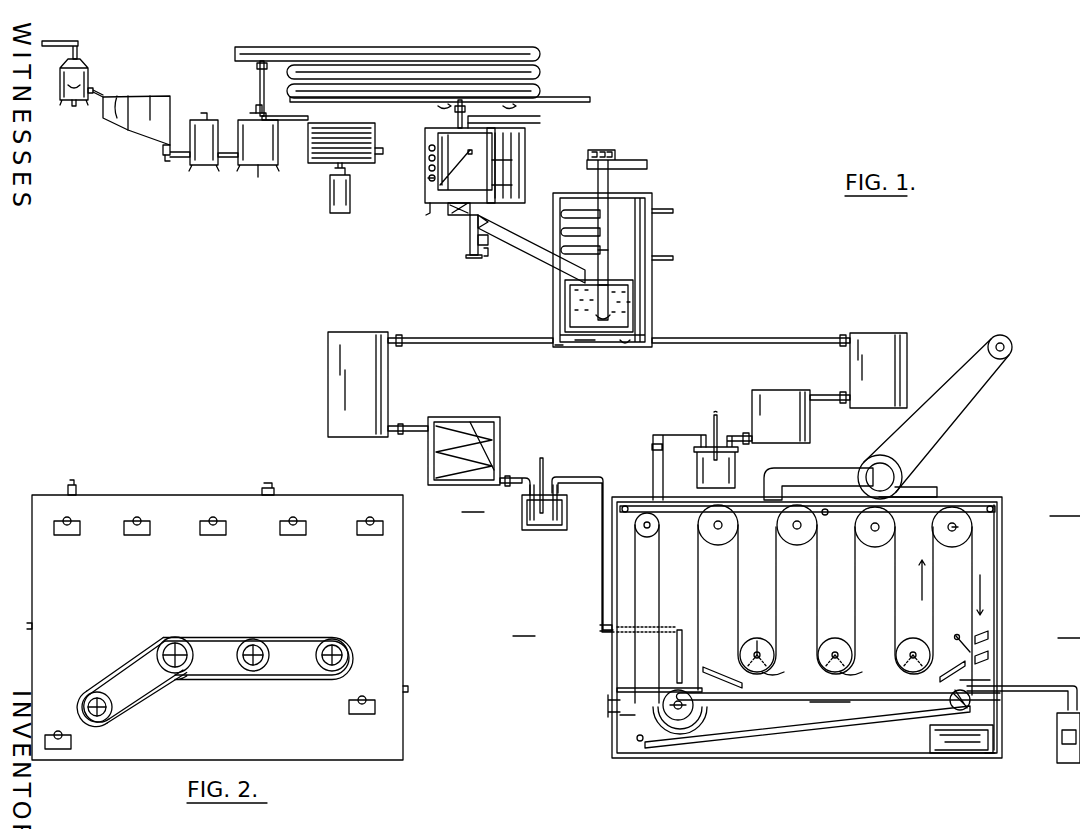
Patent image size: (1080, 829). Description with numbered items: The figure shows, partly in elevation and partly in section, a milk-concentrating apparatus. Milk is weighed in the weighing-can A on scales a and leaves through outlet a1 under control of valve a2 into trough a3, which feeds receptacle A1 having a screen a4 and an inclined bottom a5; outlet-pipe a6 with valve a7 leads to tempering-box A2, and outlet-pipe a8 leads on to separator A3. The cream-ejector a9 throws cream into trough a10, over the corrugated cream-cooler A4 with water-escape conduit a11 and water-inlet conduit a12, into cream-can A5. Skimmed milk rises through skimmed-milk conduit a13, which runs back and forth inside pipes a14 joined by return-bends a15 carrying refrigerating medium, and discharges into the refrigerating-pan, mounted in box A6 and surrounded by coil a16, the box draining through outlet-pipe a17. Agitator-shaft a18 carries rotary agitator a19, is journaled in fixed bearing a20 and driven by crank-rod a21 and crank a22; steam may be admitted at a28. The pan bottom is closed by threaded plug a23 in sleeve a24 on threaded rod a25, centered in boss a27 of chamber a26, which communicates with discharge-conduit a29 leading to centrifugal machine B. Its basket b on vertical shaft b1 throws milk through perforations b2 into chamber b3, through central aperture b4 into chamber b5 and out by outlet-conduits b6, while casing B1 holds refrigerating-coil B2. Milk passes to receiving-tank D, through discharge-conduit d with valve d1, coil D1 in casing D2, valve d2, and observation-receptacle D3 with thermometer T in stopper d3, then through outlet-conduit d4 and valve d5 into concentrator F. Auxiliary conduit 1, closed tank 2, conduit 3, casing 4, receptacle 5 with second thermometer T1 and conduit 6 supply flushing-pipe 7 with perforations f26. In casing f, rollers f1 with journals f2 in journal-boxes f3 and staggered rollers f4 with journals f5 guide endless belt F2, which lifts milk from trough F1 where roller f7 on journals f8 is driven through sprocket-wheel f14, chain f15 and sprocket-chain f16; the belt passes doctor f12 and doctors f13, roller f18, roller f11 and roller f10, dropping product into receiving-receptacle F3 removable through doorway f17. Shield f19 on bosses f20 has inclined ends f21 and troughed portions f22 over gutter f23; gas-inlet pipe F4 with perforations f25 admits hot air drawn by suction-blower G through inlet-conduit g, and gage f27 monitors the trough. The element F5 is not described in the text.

In FIG. 1, the scales a is at (66, 44).
In FIG. 1, the weighing-can A is at (61, 82).
In FIG. 1, the outlet a1 is at (91, 89).
In FIG. 1, the valve a2 is at (75, 107).
In FIG. 1, the trough a3 is at (106, 86).
In FIG. 1, the screen a4 is at (137, 113).
In FIG. 1, the bottom a5 is at (122, 100).
In FIG. 1, the outlet-pipe a6 is at (165, 160).
In FIG. 1, the valve a7 is at (162, 154).
In FIG. 1, the outlet-pipe a8 is at (228, 160).
In FIG. 1, the cream-ejector a9 is at (255, 116).
In FIG. 1, the trough a10 is at (308, 118).
In FIG. 1, the water-escape conduit a11 is at (265, 175).
In FIG. 1, the water-inlet conduit a12 is at (385, 154).
In FIG. 1, the skimmed-milk conduit a13 is at (455, 106).
In FIG. 1, the pipes a14 is at (355, 65).
In FIG. 1, the return-bends a15 is at (541, 69).
In FIG. 1, the coil a16 is at (425, 182).
In FIG. 1, the outlet-pipe a17 is at (428, 212).
In FIG. 1, the agitator-shaft a18 is at (501, 167).
In FIG. 1, the rotary agitator a19 is at (453, 218).
In FIG. 1, the fixed bearing a20 is at (521, 109).
In FIG. 1, the crank-rod a21 is at (532, 118).
In FIG. 1, the crank a22 is at (540, 123).
In FIG. 1, the threaded plug a23 is at (493, 247).
In FIG. 1, the internally-threaded sleeve a24 is at (490, 190).
In FIG. 1, the threaded rod a25 is at (474, 258).
In FIG. 1, the chamber a26 is at (470, 246).
In FIG. 1, the internally-threaded boss a27 is at (490, 260).
In FIG. 1, the steam connection a28 is at (483, 148).
In FIG. 1, the discharge-conduit a29 is at (514, 234).
In FIG. 1, the receptacle A1 is at (124, 130).
In FIG. 1, the tempering-box A2 is at (204, 142).
In FIG. 1, the separator A3 is at (258, 142).
In FIG. 1, the corrugated cream-cooler A4 is at (375, 135).
In FIG. 1, the cream-can A5 is at (327, 188).
In FIG. 1, the box A6 is at (506, 165).
In FIG. 1, the basket centrifugal machine B is at (555, 292).
In FIG. 1, the casing B1 is at (646, 305).
In FIG. 1, the refrigerating-coil B2 is at (633, 203).
In FIG. 1, the basket b is at (608, 288).
In FIG. 1, the vertical shaft b1 is at (608, 275).
In FIG. 1, the perforations b2 is at (643, 320).
In FIG. 1, the chamber b3 is at (538, 345).
In FIG. 1, the central aperture b4 is at (585, 351).
In FIG. 1, the chamber b5 is at (610, 348).
In FIG. 1, the outlet-conduits b6 is at (453, 346).
In FIG. 1, the auxiliary conduit 1 is at (751, 332).
In FIG. 1, the closed tank 2 is at (878, 370).
In FIG. 1, the conduit 3 is at (825, 402).
In FIG. 1, the casing 4 is at (774, 411).
In FIG. 1, the auxiliary closed observation-receptacle 5 is at (796, 535).
In FIG. 1, the conduit 6 is at (679, 460).
In FIG. 2, the conduit 6 is at (76, 486).
In FIG. 1, the flushing-pipe 7 is at (975, 510).
In FIG. 1, the inlet-conduit g is at (818, 478).
In FIG. 2, the inlet-conduit g is at (274, 487).
In FIG. 1, the suction-blower G is at (935, 417).
In FIG. 1, the thermometer T is at (544, 477).
In FIG. 1, the second thermometer T1 is at (708, 432).
In FIG. 1, the receiving-tank D is at (346, 384).
In FIG. 1, the coil D1 is at (430, 445).
In FIG. 1, the casing D2 is at (498, 434).
In FIG. 1, the observation-receptacle D3 is at (563, 520).
In FIG. 1, the discharge-conduit d is at (519, 488).
In FIG. 1, the valve d1 is at (400, 424).
In FIG. 1, the valve d2 is at (507, 476).
In FIG. 1, the stopper d3 is at (540, 525).
In FIG. 1, the outlet-conduit d4 is at (675, 668).
In FIG. 2, the outlet-conduit d4 is at (27, 622).
In FIG. 1, the valve d5 is at (597, 625).
In FIG. 1, the concentrator F is at (998, 567).
In FIG. 2, the concentrator F is at (404, 587).
In FIG. 1, the trough F1 is at (695, 717).
In FIG. 1, the endless belt F2 is at (738, 567).
In FIG. 1, the receiving-receptacle F3 is at (985, 754).
In FIG. 1, the gas-inlet pipe F4 is at (835, 705).
In FIG. 2, the gas-inlet pipe F4 is at (408, 690).
In FIG. 1, the motor F5 is at (1068, 738).
In FIG. 1, the closed casing f is at (998, 614).
In FIG. 1, the rollers f1 is at (943, 567).
In FIG. 1, the journals f2 is at (960, 527).
In FIG. 2, the journals f2 is at (143, 540).
In FIG. 2, the journal-boxes f3 is at (220, 535).
In FIG. 1, the rollers f4 is at (915, 640).
In FIG. 1, the journals f5 is at (785, 642).
In FIG. 2, the journals f5 is at (197, 642).
In FIG. 1, the roller f7 is at (615, 726).
In FIG. 1, the journals f8 is at (672, 712).
In FIG. 2, the journals f8 is at (108, 715).
In FIG. 1, the transverse roller f10 is at (660, 525).
In FIG. 1, the transverse roller f11 is at (635, 740).
In FIG. 1, the doctor f12 is at (958, 633).
In FIG. 1, the doctors f13 is at (988, 650).
In FIG. 2, the sprocket-wheel f14 is at (145, 673).
In FIG. 2, the chain f15 is at (162, 680).
In FIG. 2, the sprocket-chain f16 is at (231, 670).
In FIG. 1, the doorway f17 is at (930, 728).
In FIG. 1, the roller f18 is at (985, 700).
In FIG. 1, the shield f19 is at (780, 660).
In FIG. 1, the boss f20 is at (875, 665).
In FIG. 1, the inclined end portions f21 is at (945, 670).
In FIG. 1, the troughed portions f22 is at (750, 730).
In FIG. 1, the gutter f23 is at (988, 675).
In FIG. 1, the perforations f25 is at (750, 700).
In FIG. 1, the perforations f26 is at (1002, 508).
In FIG. 1, the gage f27 is at (605, 703).